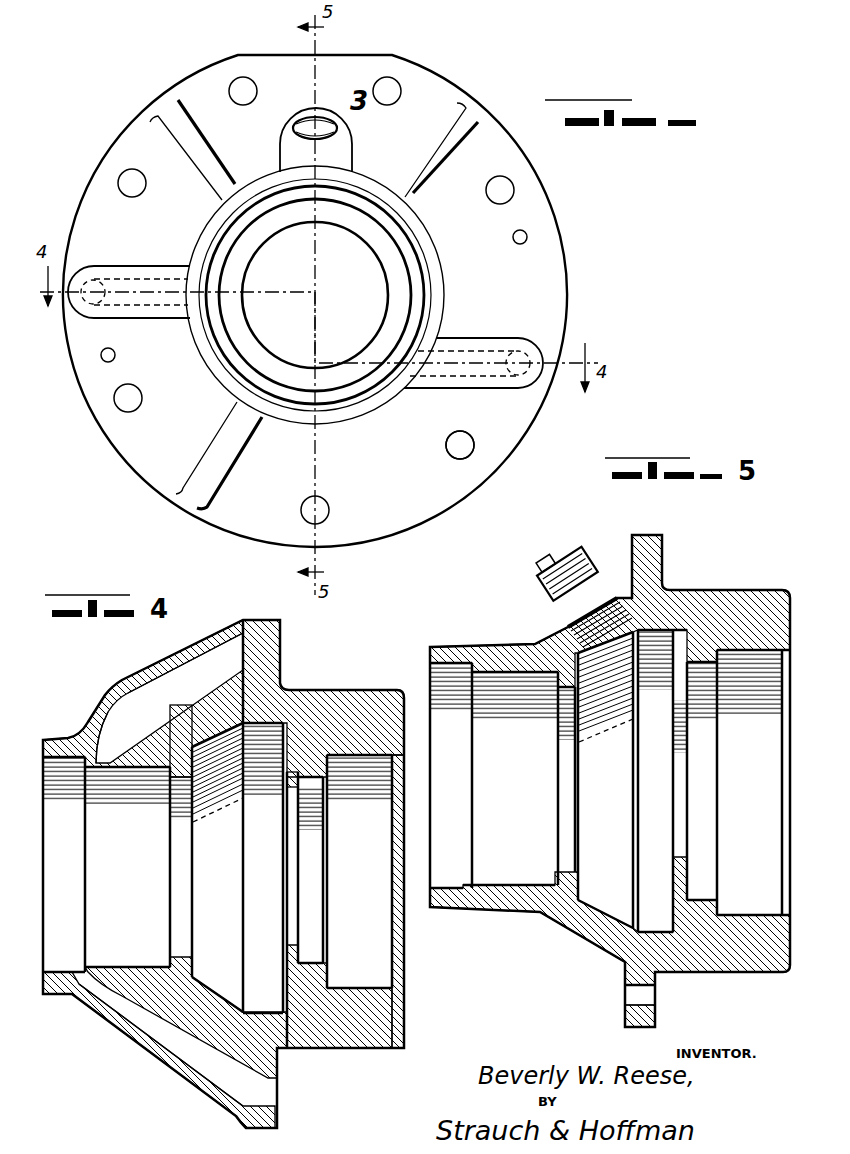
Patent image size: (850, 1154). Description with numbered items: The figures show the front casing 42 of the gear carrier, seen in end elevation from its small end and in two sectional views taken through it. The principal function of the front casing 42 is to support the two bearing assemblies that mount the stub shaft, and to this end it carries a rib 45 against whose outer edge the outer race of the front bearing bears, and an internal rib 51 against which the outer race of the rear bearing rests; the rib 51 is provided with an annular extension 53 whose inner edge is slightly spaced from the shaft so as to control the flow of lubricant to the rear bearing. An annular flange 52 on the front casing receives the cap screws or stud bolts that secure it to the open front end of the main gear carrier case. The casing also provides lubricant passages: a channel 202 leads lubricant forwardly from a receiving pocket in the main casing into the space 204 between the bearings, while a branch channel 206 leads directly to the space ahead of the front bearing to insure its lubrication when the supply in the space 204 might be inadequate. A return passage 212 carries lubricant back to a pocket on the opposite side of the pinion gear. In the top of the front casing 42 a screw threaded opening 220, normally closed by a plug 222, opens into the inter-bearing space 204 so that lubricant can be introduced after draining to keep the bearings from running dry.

In FIG. 3, the front housing portion 42 is at (218, 526).
In FIG. 4, the front housing portion 42 is at (115, 1035).
In FIG. 5, the front housing portion 42 is at (574, 944).
In FIG. 3, the rib 45 is at (386, 205).
In FIG. 4, the rib 45 is at (180, 797).
In FIG. 5, the rib 45 is at (565, 690).
In FIG. 4, the rib 51 is at (302, 742).
In FIG. 5, the rib 51 is at (698, 648).
In FIG. 3, the annular flange 52 is at (437, 508).
In FIG. 5, the annular flange 52 is at (622, 1015).
In FIG. 4, the annular extension 53 is at (282, 795).
In FIG. 5, the annular extension 53 is at (680, 692).
In FIG. 3, the channel 202 is at (83, 322).
In FIG. 4, the channel 202 is at (163, 682).
In FIG. 4, the space 204 is at (226, 725).
In FIG. 4, the branch channel 206 is at (95, 716).
In FIG. 3, the passage 212 is at (530, 390).
In FIG. 4, the passage 212 is at (230, 1075).
In FIG. 3, the screw threaded opening 220 is at (314, 118).
In FIG. 5, the screw threaded opening 220 is at (566, 622).
In FIG. 5, the plug 222 is at (592, 548).